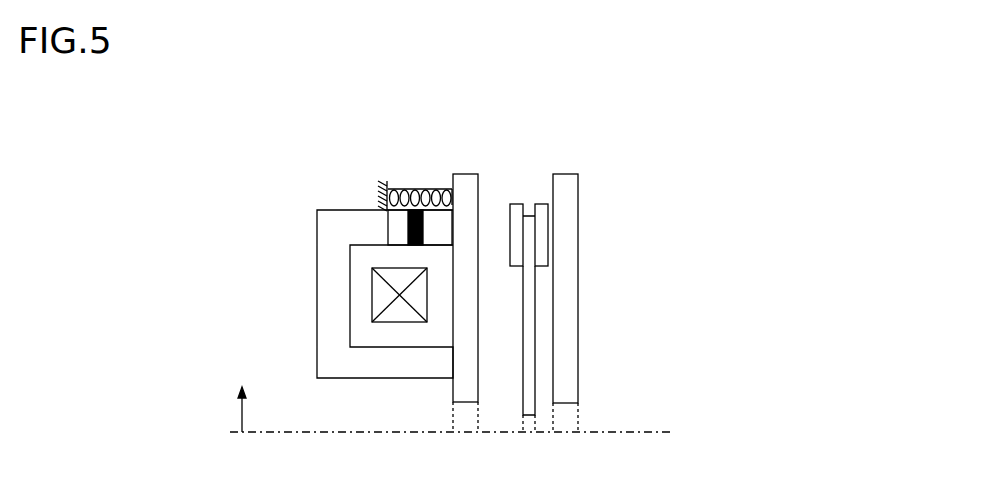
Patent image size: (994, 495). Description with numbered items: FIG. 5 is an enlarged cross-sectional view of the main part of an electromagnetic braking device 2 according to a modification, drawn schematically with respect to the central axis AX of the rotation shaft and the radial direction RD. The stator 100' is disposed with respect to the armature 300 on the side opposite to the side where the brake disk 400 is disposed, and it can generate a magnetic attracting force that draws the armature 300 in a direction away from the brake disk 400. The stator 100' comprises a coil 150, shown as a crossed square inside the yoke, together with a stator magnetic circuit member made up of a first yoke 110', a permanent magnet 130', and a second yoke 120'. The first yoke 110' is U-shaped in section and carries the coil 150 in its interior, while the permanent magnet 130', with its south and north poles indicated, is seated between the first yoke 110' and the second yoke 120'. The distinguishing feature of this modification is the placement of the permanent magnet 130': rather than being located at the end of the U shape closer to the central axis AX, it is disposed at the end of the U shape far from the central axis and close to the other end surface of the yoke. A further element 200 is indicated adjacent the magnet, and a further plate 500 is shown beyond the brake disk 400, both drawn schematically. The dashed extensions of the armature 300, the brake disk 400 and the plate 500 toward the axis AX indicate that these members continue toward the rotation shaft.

The electromagnetic braking device 2 is at (659, 96).
The stator 100' is at (371, 305).
The first yoke 110' is at (385, 346).
The second yoke 120' is at (436, 186).
The permanent magnet 130' is at (397, 170).
The coil 150 is at (383, 295).
The detection element 200 is at (415, 210).
The armature 300 is at (465, 173).
The brake disk 400 is at (527, 189).
The third plate 500 is at (567, 173).